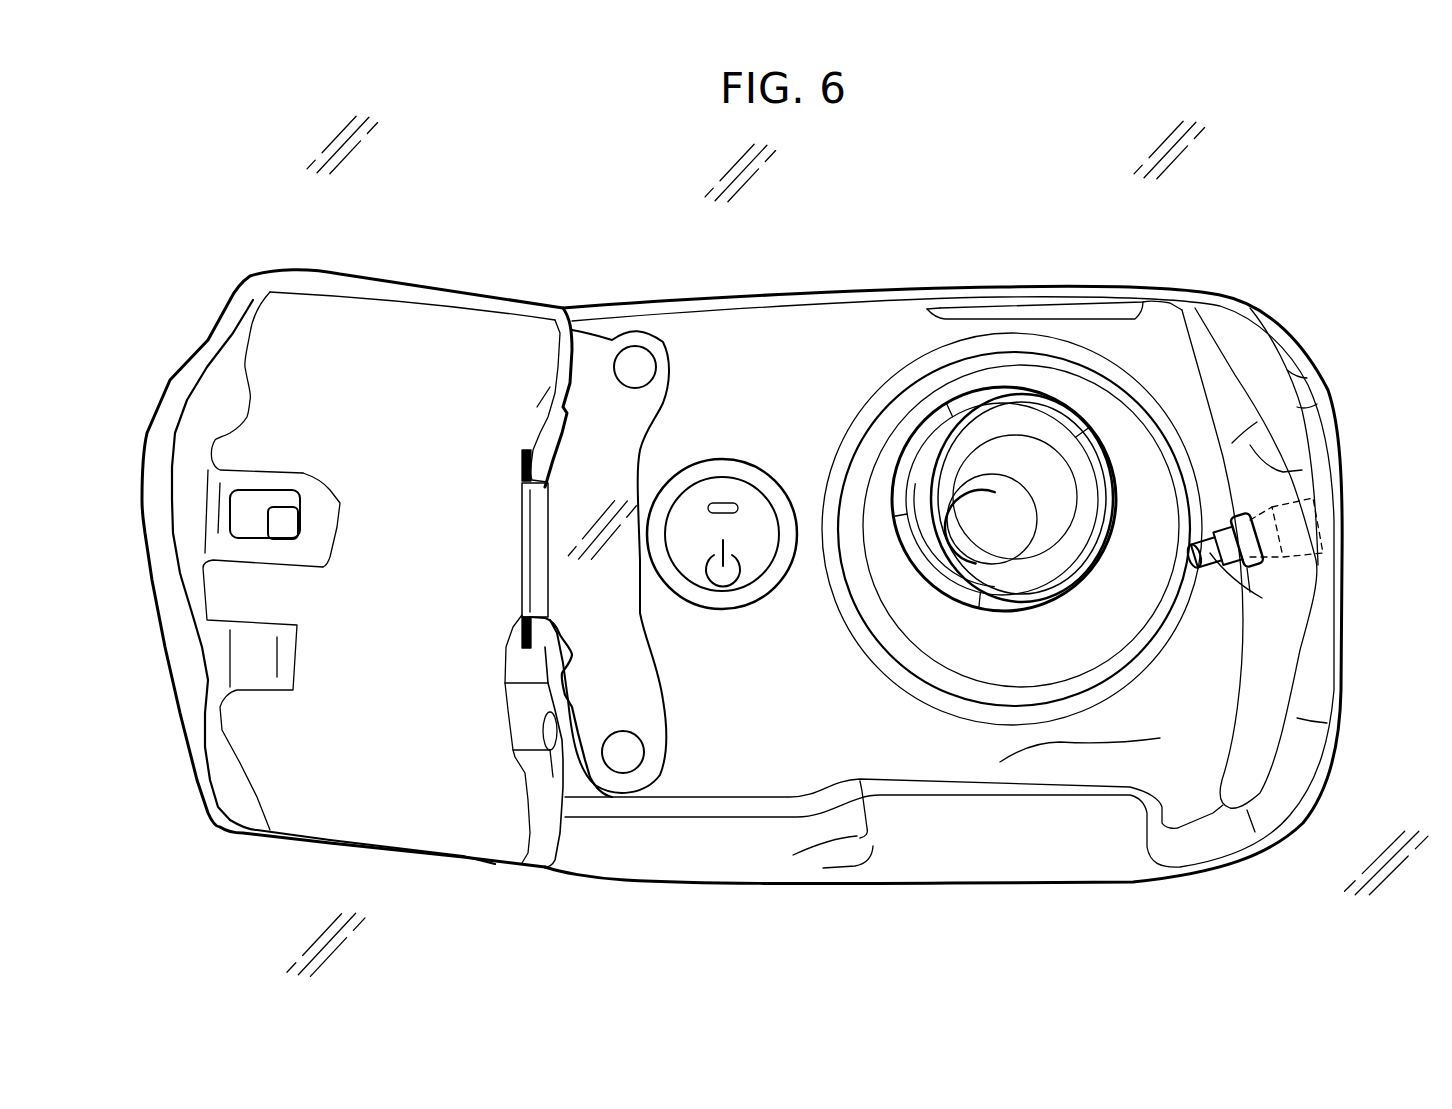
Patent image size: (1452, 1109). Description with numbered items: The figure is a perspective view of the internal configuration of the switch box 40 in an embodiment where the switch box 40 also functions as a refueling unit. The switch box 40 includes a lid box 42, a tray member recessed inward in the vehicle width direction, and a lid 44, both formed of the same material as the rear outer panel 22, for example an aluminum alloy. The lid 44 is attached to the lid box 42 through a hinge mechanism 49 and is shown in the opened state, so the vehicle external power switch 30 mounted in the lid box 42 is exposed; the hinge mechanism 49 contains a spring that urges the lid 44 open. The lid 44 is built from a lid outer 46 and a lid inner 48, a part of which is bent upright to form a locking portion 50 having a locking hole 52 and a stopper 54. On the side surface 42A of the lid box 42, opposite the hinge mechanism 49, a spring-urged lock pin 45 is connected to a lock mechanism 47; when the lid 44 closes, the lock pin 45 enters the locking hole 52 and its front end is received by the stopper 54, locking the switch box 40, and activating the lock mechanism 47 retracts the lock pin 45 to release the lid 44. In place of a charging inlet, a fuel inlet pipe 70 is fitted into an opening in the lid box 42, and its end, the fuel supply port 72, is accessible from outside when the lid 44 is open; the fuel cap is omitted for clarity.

The rear outer panel 22 is at (870, 247).
The vehicle external power switch 30 is at (747, 490).
The switch box 40 is at (643, 905).
The lid box 42 is at (712, 343).
The side surface 42A is at (1290, 475).
The lid 44 is at (423, 287).
The lock pin 45 is at (1272, 600).
The lid outer 46 is at (197, 347).
The lock mechanism 47 is at (1313, 498).
The lid inner 48 is at (230, 383).
The hinge mechanism 49 is at (510, 463).
The locking portion 50 is at (320, 510).
The locking hole 52 is at (250, 500).
The stopper 54 is at (280, 527).
The fuel inlet pipe 70 is at (920, 477).
The fuel supply port 72 is at (1065, 558).